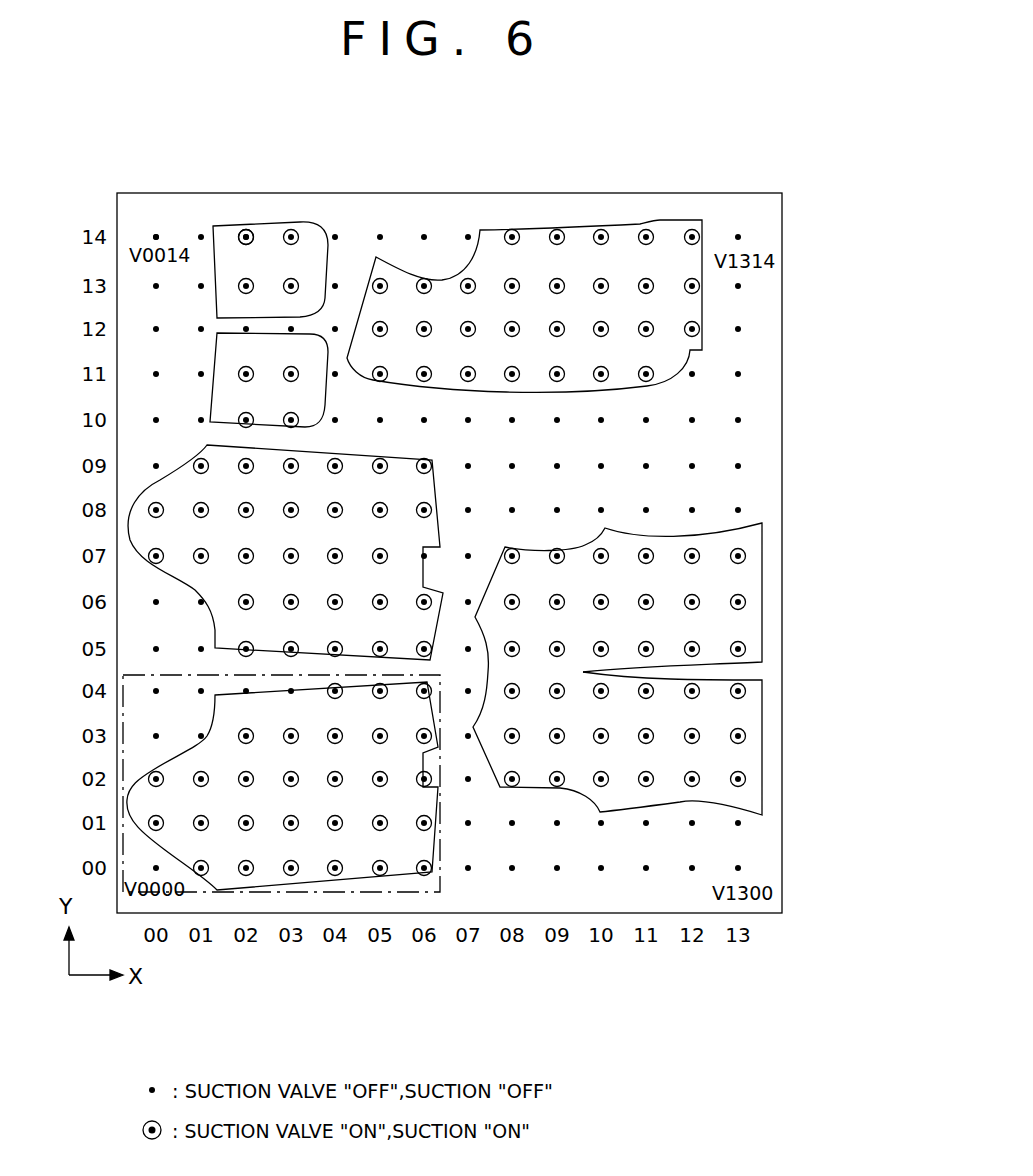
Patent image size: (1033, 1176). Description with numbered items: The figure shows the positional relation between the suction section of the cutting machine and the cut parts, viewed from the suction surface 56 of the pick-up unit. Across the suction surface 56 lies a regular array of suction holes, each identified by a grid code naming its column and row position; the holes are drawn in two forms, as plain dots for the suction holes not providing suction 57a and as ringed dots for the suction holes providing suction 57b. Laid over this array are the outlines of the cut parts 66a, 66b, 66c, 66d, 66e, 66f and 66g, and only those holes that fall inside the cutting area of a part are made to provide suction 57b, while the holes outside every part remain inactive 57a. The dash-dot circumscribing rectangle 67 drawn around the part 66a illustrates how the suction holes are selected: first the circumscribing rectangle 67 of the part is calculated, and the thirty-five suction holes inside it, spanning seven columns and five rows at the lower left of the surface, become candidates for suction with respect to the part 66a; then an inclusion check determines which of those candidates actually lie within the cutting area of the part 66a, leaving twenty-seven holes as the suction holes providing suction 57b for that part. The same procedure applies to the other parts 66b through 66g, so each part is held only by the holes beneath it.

The suction surface 56 is at (723, 218).
The suction holes not providing suction 57a is at (157, 233).
The suction holes providing suction 57b is at (250, 229).
The cut part 66a is at (403, 873).
The cut part 66b is at (762, 765).
The cut part 66c is at (763, 647).
The cut part 66d is at (440, 484).
The cut part 66e is at (580, 192).
The cut part 66f is at (326, 337).
The cut part 66g is at (313, 220).
The circumscribing rectangle 67 is at (203, 890).